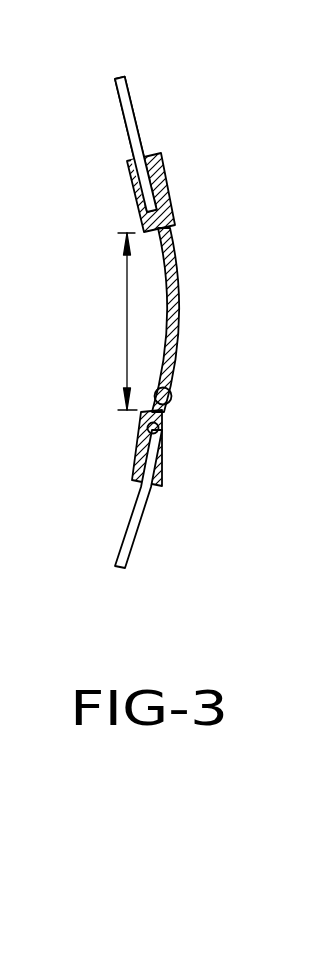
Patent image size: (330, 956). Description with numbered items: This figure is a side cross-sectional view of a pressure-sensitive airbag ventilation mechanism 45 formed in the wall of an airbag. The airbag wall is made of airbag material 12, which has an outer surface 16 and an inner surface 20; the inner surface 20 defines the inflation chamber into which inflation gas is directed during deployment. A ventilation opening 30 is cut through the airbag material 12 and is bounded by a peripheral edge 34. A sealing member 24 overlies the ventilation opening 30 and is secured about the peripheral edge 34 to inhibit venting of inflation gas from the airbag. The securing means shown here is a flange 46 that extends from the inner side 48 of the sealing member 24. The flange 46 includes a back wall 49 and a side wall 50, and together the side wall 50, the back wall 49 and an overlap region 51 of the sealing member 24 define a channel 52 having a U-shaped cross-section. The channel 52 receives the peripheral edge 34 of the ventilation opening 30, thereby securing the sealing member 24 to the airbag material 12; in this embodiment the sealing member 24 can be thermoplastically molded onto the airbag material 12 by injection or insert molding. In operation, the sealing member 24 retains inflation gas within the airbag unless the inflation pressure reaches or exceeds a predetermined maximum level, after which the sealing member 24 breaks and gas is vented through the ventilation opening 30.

The airbag material 12 is at (127, 116).
The outer surface 16 is at (127, 143).
The inner surface 20 is at (128, 133).
The sealing member 24 is at (155, 154).
The peripheral edge 34 is at (140, 230).
The ventilation opening 30 is at (127, 297).
The pressure-sensitive airbag ventilation mechanism 45 is at (205, 321).
The inner side 48 is at (172, 384).
The flange 46 is at (144, 461).
The back wall 49 is at (168, 450).
The side wall 50 is at (144, 461).
The overlap region 51 is at (167, 467).
The channel 52 is at (152, 499).